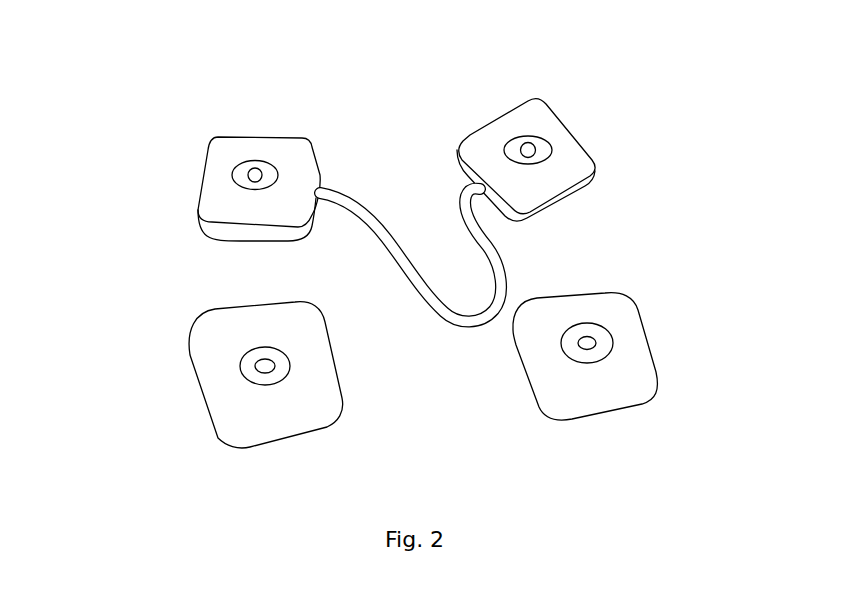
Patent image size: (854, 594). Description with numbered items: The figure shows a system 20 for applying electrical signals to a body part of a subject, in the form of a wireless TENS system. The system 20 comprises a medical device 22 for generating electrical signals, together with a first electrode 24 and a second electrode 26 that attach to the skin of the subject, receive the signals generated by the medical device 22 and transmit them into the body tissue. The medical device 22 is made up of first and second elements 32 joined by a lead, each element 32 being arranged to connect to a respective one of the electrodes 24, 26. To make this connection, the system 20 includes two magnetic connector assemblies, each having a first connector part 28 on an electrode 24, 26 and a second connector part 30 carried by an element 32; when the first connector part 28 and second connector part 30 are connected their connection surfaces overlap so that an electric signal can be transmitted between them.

The system 20 is at (320, 72).
The medical device 22 is at (148, 110).
The first electrode 24 is at (218, 336).
The second electrode 26 is at (625, 379).
The first connector part 28 is at (240, 373).
The second connector part 30 is at (246, 165).
The element 32 is at (228, 203).